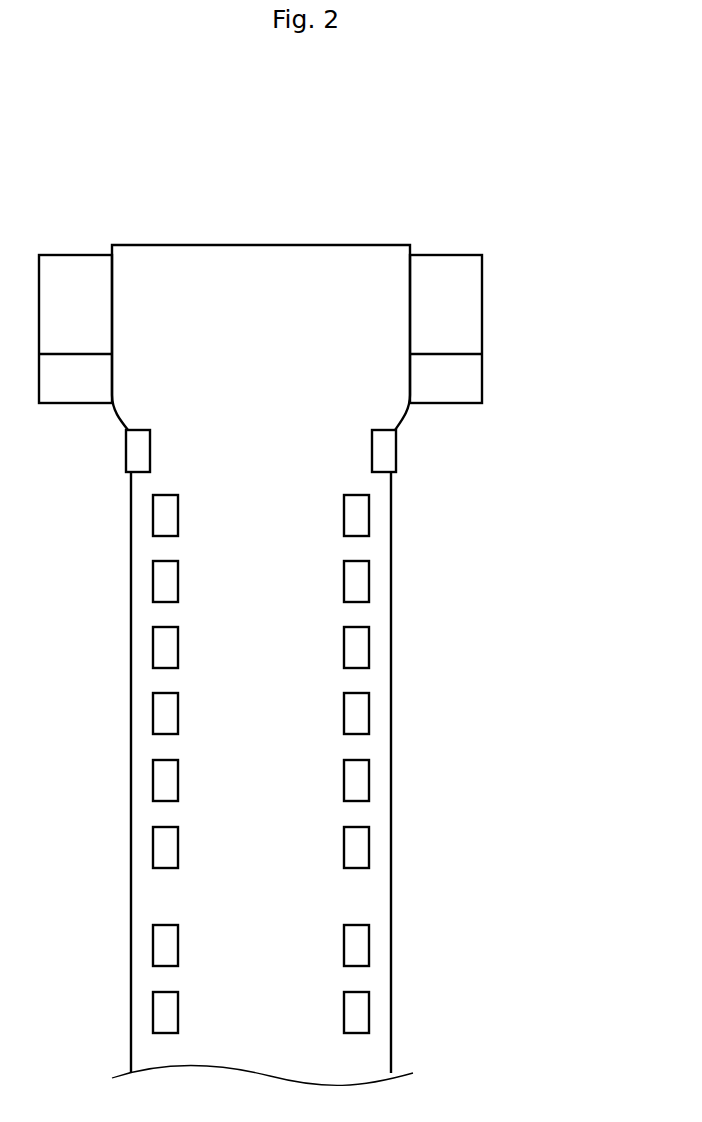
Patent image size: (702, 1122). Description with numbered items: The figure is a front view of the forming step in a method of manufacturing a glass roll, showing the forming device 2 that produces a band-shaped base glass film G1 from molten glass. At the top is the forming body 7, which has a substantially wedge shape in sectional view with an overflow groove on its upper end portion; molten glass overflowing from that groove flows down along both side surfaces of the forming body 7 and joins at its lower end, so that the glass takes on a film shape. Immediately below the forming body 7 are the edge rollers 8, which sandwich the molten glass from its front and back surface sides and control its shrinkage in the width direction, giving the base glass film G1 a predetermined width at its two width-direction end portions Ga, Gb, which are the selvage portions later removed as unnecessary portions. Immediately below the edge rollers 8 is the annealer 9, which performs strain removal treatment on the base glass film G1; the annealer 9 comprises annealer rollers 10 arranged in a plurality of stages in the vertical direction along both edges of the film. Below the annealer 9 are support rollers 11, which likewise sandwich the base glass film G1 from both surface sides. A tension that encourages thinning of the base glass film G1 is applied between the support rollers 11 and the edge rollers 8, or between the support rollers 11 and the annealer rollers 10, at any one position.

The forming device 2 is at (524, 164).
The forming body 7 is at (462, 310).
The edge rollers 8 is at (138, 452).
The annealer 9 is at (292, 772).
The annealer rollers 10 is at (163, 514).
The support rollers 11 is at (162, 1012).
The base glass film G1 is at (298, 767).
The end portion Ga is at (383, 811).
The end portion Gb is at (142, 810).